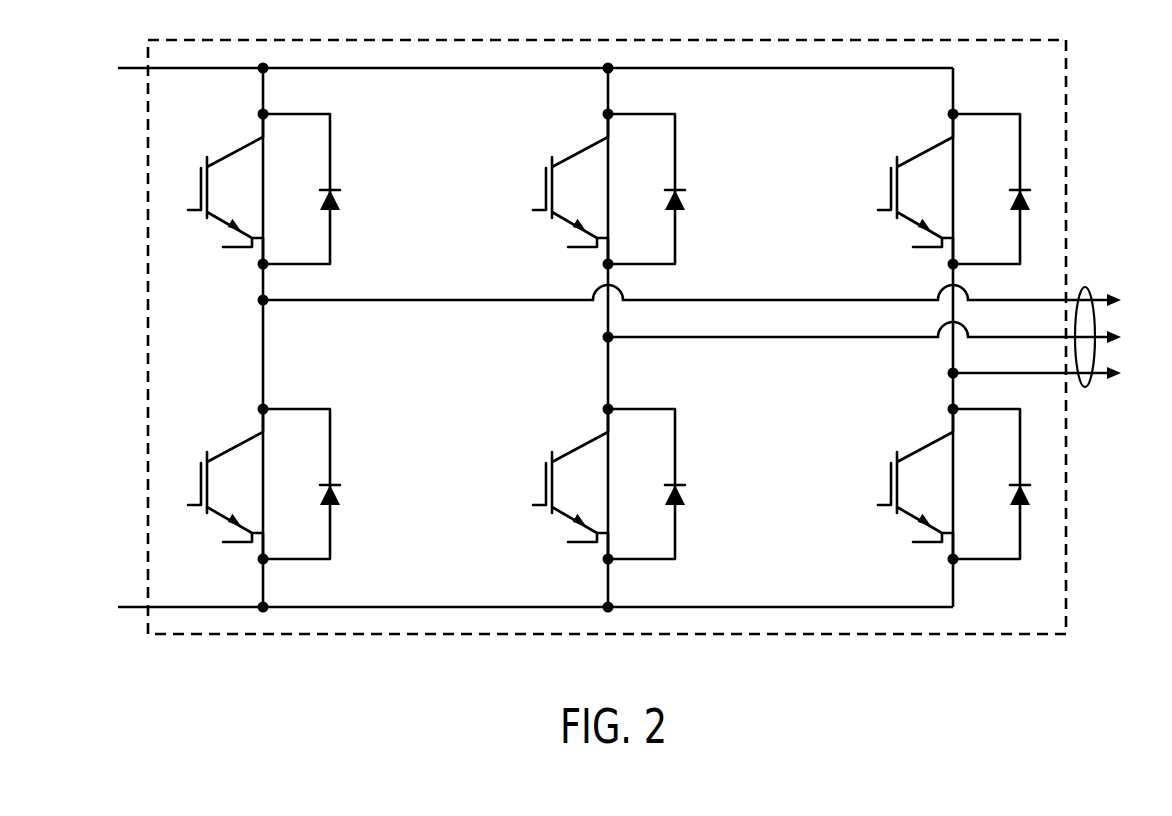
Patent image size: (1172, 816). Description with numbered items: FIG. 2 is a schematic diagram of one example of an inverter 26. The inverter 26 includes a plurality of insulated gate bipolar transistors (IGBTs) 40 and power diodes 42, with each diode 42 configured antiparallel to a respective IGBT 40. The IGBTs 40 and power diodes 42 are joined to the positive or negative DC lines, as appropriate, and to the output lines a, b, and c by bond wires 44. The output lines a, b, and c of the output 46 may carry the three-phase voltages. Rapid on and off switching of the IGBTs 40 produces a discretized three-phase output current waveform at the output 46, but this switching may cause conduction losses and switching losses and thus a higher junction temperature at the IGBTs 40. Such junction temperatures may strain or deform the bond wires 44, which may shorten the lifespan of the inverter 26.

The inverter 26 is at (170, 667).
The insulated gate bipolar transistor 40 is at (202, 185).
The power diode 42 is at (320, 190).
The bond wire 44 is at (263, 90).
The output 46 is at (1085, 291).